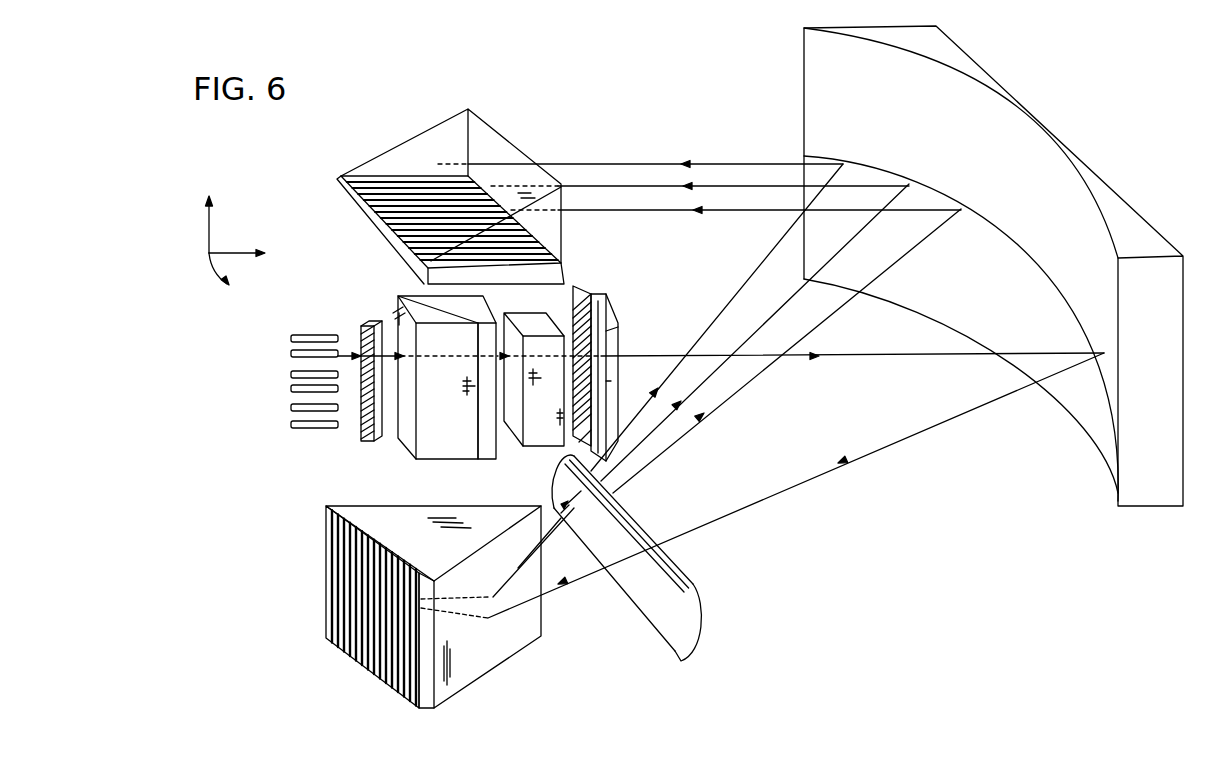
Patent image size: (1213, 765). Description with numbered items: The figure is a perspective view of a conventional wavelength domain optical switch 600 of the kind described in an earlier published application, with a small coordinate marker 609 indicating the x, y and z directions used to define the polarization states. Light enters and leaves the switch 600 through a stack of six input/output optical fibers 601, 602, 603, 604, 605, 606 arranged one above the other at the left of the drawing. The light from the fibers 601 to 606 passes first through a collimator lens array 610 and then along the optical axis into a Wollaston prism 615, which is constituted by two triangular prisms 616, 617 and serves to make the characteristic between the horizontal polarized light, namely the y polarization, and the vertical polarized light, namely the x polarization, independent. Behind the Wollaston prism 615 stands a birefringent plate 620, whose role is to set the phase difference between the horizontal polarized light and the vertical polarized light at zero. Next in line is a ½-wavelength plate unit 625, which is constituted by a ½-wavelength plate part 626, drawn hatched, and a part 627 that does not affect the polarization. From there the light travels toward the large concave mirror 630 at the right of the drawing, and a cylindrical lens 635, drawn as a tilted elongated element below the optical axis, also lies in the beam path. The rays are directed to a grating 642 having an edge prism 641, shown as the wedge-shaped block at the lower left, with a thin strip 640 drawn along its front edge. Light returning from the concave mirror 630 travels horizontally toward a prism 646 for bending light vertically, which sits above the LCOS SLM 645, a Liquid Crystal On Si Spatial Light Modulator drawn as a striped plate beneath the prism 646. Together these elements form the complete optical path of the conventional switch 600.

The wavelength domain optical switch 600 is at (685, 63).
The input/output optical fiber 601 is at (305, 337).
The input/output optical fiber 602 is at (305, 352).
The input/output optical fiber 603 is at (302, 373).
The input/output optical fiber 604 is at (302, 387).
The input/output optical fiber 605 is at (302, 407).
The input/output optical fiber 606 is at (302, 424).
The coordinate axes 609 is at (231, 222).
The collimator lens array 610 is at (372, 318).
The Wollaston prism 615 is at (446, 462).
The triangular prism 616 is at (427, 300).
The triangular prism 617 is at (482, 304).
The birefringent plate 620 is at (538, 447).
The ½-wavelength plate unit 625 is at (592, 299).
The ½-wavelength plate part 626 is at (577, 288).
The part that does not affect the polarization 627 is at (606, 341).
The concave mirror 630 is at (1157, 482).
The cylindrical lens 635 is at (648, 627).
The retarder strip 640 is at (431, 712).
The edge prism 641 is at (473, 655).
The grating 642 is at (378, 668).
The LCOS SLM 645 is at (348, 213).
The prism for bending light vertically 646 is at (400, 146).